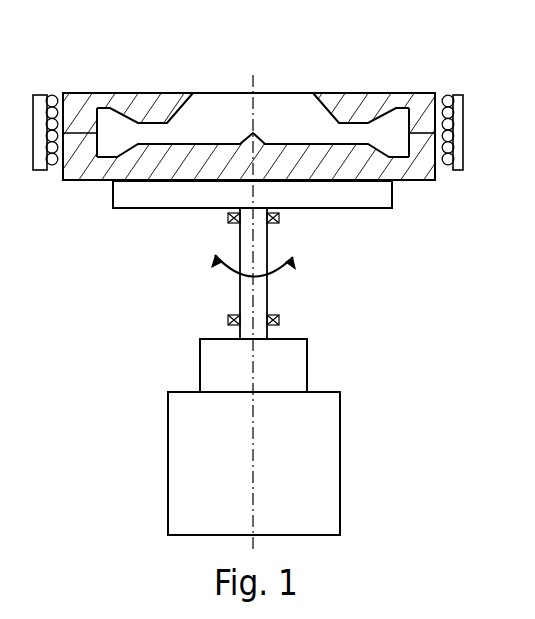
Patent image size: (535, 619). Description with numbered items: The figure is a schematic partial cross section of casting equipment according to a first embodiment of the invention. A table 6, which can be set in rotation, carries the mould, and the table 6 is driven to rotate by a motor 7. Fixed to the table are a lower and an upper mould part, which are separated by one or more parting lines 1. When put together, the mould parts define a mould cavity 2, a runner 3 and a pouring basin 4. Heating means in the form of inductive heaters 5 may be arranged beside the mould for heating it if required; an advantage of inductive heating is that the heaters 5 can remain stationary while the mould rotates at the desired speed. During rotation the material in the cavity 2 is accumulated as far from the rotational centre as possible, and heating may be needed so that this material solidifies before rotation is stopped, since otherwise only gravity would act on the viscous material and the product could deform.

The parting line 1 is at (82, 130).
The mould cavity 2 is at (116, 120).
The runner 3 is at (156, 128).
The pouring basin 4 is at (279, 104).
The inductive heater 5 is at (440, 92).
The table 6 is at (371, 210).
The motor 7 is at (341, 390).